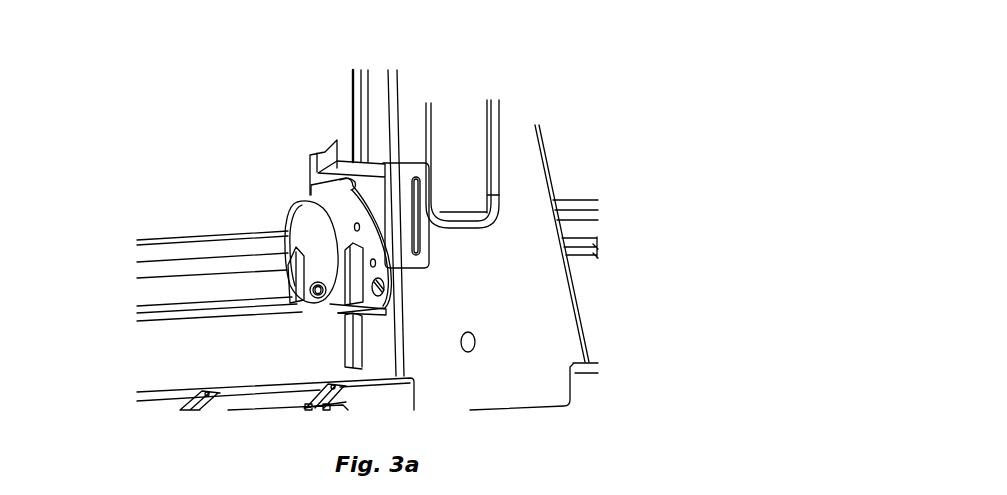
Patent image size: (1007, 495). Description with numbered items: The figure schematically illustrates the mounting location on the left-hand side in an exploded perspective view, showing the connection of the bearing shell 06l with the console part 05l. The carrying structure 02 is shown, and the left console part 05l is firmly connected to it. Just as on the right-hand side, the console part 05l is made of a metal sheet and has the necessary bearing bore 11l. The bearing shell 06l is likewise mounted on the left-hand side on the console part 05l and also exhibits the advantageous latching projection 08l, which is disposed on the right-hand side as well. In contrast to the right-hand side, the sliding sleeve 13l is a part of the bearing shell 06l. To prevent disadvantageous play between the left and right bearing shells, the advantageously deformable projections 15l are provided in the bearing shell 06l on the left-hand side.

The console part 05l is at (311, 192).
The bearing shell 06l is at (327, 200).
The latching projection 08l is at (307, 278).
The sliding sleeve 13l is at (311, 297).
The deformable projections 15l is at (322, 308).
The bearing bore 11l is at (370, 318).
The carrying structure 02 is at (543, 328).